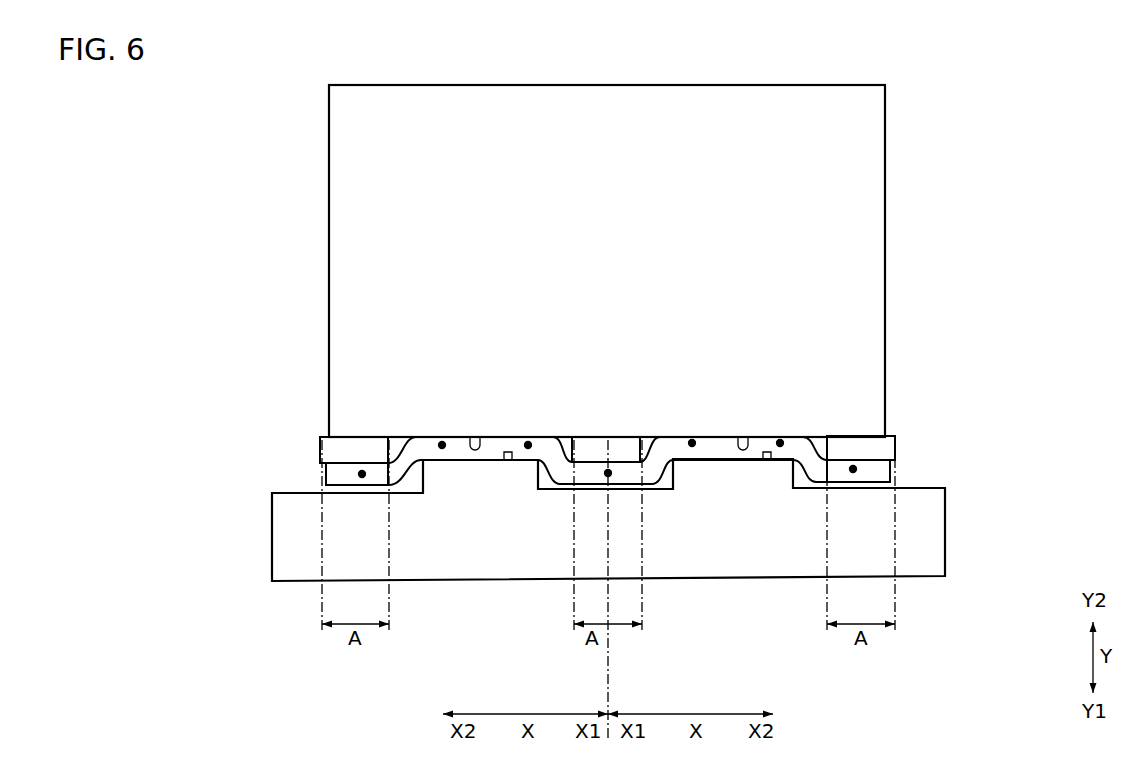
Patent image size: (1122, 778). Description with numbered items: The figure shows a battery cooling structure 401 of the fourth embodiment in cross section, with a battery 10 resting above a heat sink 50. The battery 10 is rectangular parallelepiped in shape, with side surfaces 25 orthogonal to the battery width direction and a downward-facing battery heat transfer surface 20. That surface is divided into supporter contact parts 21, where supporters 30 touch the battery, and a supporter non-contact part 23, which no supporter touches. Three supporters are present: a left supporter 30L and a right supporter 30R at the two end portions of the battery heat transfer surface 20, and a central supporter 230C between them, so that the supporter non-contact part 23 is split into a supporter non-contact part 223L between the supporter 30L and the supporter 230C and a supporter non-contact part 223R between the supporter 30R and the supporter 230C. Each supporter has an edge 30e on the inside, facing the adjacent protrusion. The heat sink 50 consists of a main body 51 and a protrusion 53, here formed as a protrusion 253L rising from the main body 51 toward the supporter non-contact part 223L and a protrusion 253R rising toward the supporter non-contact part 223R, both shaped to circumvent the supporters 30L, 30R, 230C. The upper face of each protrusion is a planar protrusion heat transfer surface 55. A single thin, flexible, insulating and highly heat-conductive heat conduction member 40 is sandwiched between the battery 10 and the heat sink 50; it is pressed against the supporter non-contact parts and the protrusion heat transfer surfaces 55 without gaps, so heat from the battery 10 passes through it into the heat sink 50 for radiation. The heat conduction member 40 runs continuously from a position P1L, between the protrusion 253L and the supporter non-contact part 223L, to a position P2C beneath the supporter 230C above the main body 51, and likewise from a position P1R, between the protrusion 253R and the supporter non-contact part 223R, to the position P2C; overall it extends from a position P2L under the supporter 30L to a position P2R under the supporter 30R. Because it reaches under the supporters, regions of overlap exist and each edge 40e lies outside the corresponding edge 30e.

The battery cooling structure 401 is at (276, 94).
The battery 10 is at (340, 188).
The side surface 25 is at (328, 258).
The battery heat transfer surface 20 is at (612, 335).
The supporter contact part 21 is at (596, 437).
The supporter non-contact part 23 is at (608, 340).
The supporter non-contact part 223L is at (470, 437).
The supporter non-contact part 223R is at (738, 437).
The supporter 30 is at (614, 563).
The supporter 30L is at (320, 470).
The supporter 30R is at (902, 454).
The supporter 230C is at (624, 480).
The edge 30e is at (399, 437).
The heat conduction member 40 is at (488, 437).
The edge 40e is at (318, 481).
The heat sink 50 is at (290, 573).
The main body 51 is at (262, 540).
The protrusion 53 is at (604, 572).
The protrusion 253L is at (465, 472).
The protrusion 253R is at (725, 475).
The protrusion heat transfer surface 55 is at (515, 460).
The position P1L is at (528, 442).
The position P1R is at (780, 440).
The position P2L is at (362, 470).
The position P2C is at (609, 469).
The position P2R is at (853, 466).